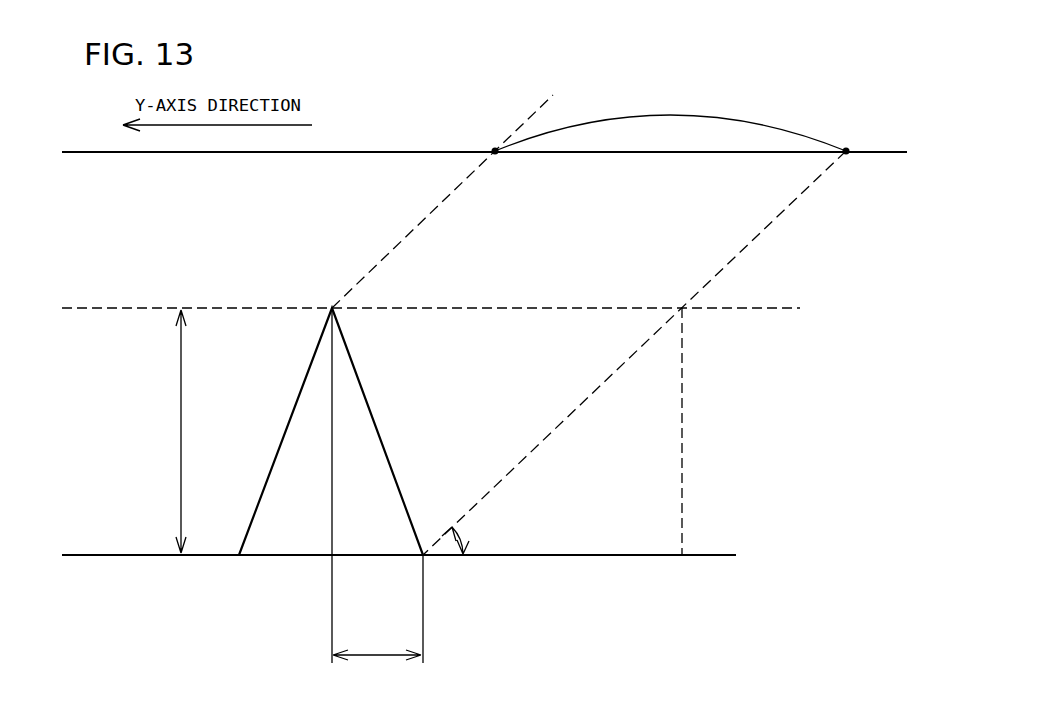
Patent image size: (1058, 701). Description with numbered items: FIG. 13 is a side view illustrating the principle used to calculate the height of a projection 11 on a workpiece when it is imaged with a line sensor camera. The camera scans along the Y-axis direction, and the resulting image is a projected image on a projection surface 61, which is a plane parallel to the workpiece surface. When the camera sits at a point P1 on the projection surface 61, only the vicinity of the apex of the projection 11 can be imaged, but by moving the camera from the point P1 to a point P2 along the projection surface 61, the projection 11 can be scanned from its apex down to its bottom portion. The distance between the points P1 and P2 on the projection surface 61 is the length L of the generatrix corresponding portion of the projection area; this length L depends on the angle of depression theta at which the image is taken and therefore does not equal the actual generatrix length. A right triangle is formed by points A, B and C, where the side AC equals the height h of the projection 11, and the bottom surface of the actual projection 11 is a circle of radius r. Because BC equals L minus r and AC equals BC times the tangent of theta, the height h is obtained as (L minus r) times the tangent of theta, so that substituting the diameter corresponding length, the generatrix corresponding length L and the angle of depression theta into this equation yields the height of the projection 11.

The projection 11 is at (277, 542).
The projection surface 61 is at (873, 155).
The point P1 is at (495, 148).
The point P2 is at (846, 148).
The length of the generatrix corresponding portion L is at (670, 120).
The point A is at (692, 325).
The point B is at (433, 571).
The point C is at (679, 571).
The height of the projection h is at (172, 431).
The radius of the bottom surface r is at (377, 645).
The angle of depression theta is at (461, 540).